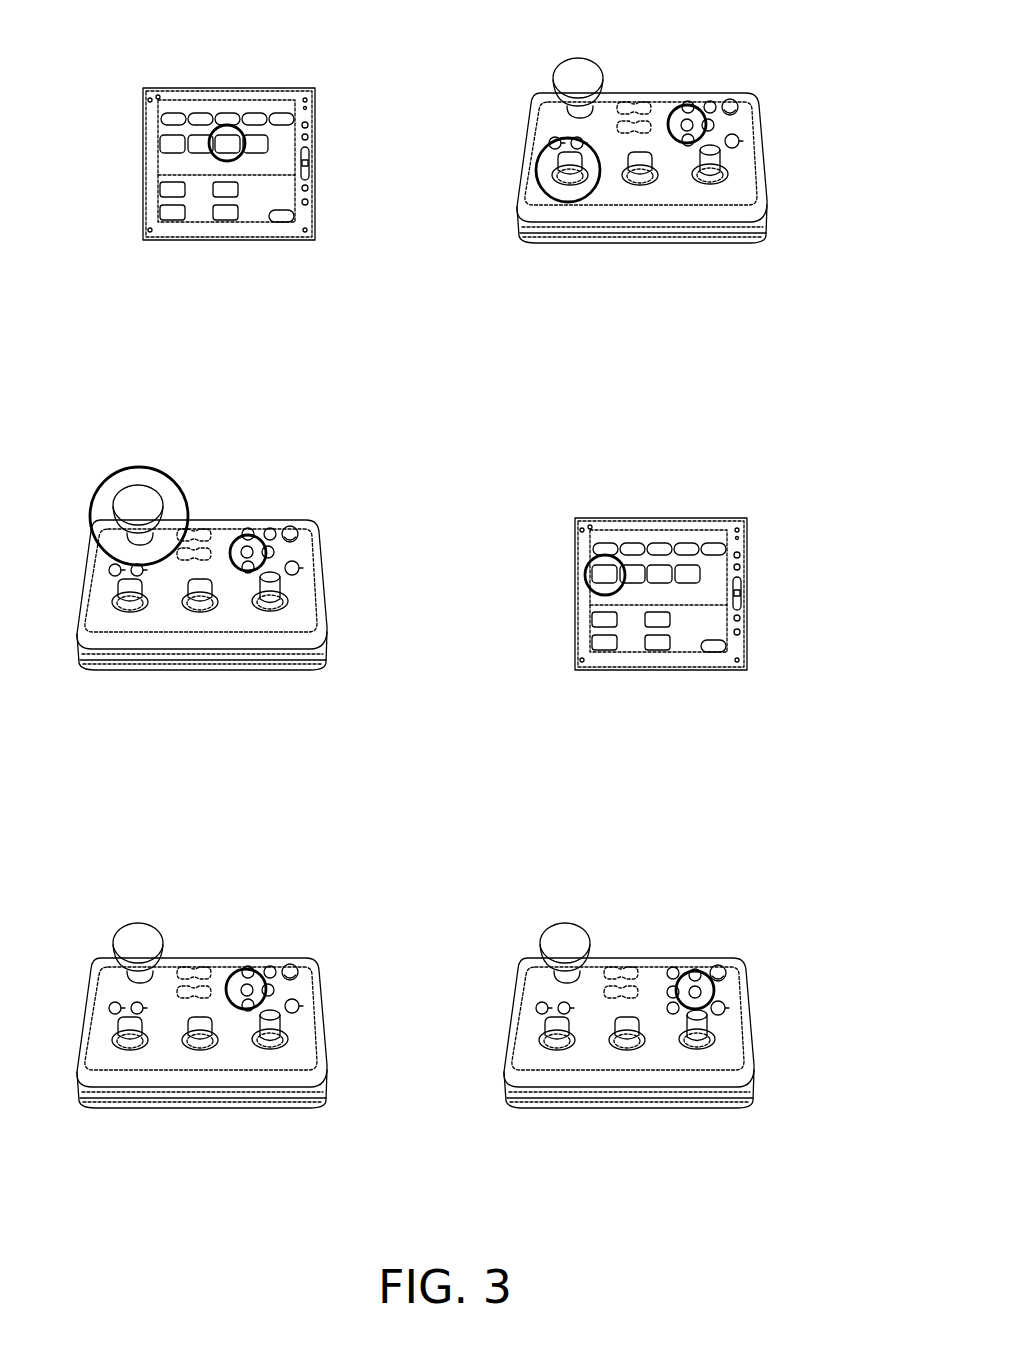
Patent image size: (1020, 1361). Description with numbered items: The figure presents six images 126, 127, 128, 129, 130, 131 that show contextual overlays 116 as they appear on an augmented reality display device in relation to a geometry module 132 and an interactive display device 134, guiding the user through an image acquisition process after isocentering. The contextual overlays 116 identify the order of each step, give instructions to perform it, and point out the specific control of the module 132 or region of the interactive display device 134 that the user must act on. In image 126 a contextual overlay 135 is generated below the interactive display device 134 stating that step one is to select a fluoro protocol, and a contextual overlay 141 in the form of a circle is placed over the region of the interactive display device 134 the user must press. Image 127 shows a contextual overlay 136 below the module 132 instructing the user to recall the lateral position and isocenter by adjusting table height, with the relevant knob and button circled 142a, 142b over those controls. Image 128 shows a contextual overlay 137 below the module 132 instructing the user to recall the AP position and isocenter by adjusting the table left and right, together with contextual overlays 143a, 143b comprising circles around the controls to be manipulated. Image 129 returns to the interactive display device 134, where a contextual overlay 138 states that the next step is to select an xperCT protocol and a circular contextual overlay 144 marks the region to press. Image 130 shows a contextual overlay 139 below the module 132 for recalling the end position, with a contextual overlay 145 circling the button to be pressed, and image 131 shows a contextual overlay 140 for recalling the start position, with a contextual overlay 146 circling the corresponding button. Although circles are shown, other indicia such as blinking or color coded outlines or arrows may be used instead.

The contextual overlays 116 is at (649, 763).
The image 126 is at (227, 128).
The image 127 is at (672, 130).
The image 128 is at (244, 540).
The image 129 is at (649, 763).
The image 130 is at (244, 1011).
The image 131 is at (672, 1011).
The geometry module 132 is at (752, 95).
The interactive display device 134 is at (290, 88).
The contextual overlay 135 is at (228, 308).
The contextual overlay 136 is at (648, 335).
The contextual overlay 137 is at (236, 775).
The contextual overlay 138 is at (772, 745).
The contextual overlay 139 is at (185, 1180).
The contextual overlay 140 is at (636, 1180).
The contextual overlay 141 is at (218, 140).
The circled control 142a is at (550, 158).
The circled control 142b is at (690, 105).
The contextual overlay 143a is at (143, 480).
The contextual overlay 143b is at (250, 535).
The contextual overlay 144 is at (607, 555).
The contextual overlay 145 is at (247, 975).
The contextual overlay 146 is at (697, 975).